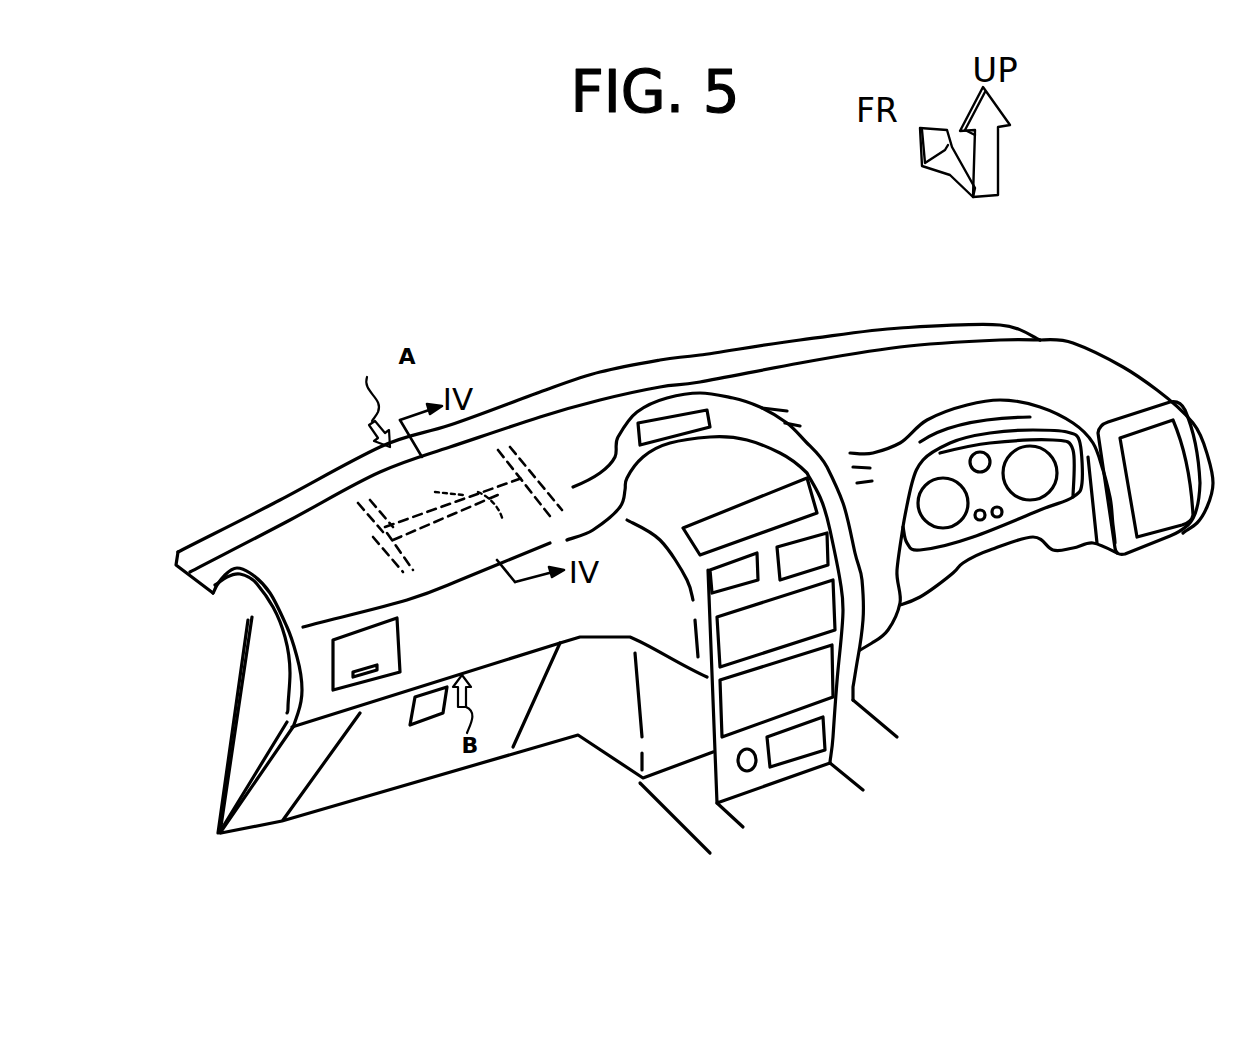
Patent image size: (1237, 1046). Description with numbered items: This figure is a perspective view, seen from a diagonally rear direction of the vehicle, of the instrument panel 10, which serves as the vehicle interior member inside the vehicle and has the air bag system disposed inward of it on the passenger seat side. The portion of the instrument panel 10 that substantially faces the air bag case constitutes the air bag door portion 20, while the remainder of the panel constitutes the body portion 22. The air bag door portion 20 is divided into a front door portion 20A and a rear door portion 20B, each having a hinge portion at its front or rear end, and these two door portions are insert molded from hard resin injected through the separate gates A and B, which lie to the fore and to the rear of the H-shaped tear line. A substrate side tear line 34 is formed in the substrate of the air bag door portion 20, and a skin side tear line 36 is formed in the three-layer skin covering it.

The instrument panel 10 is at (452, 308).
The air bag door portion 20 is at (487, 477).
The body portion 22 is at (572, 452).
The front door portion 20A is at (376, 497).
The rear door portion 20B is at (402, 545).
The substrate side tear line 34 is at (426, 571).
The skin side tear line 36 is at (448, 498).